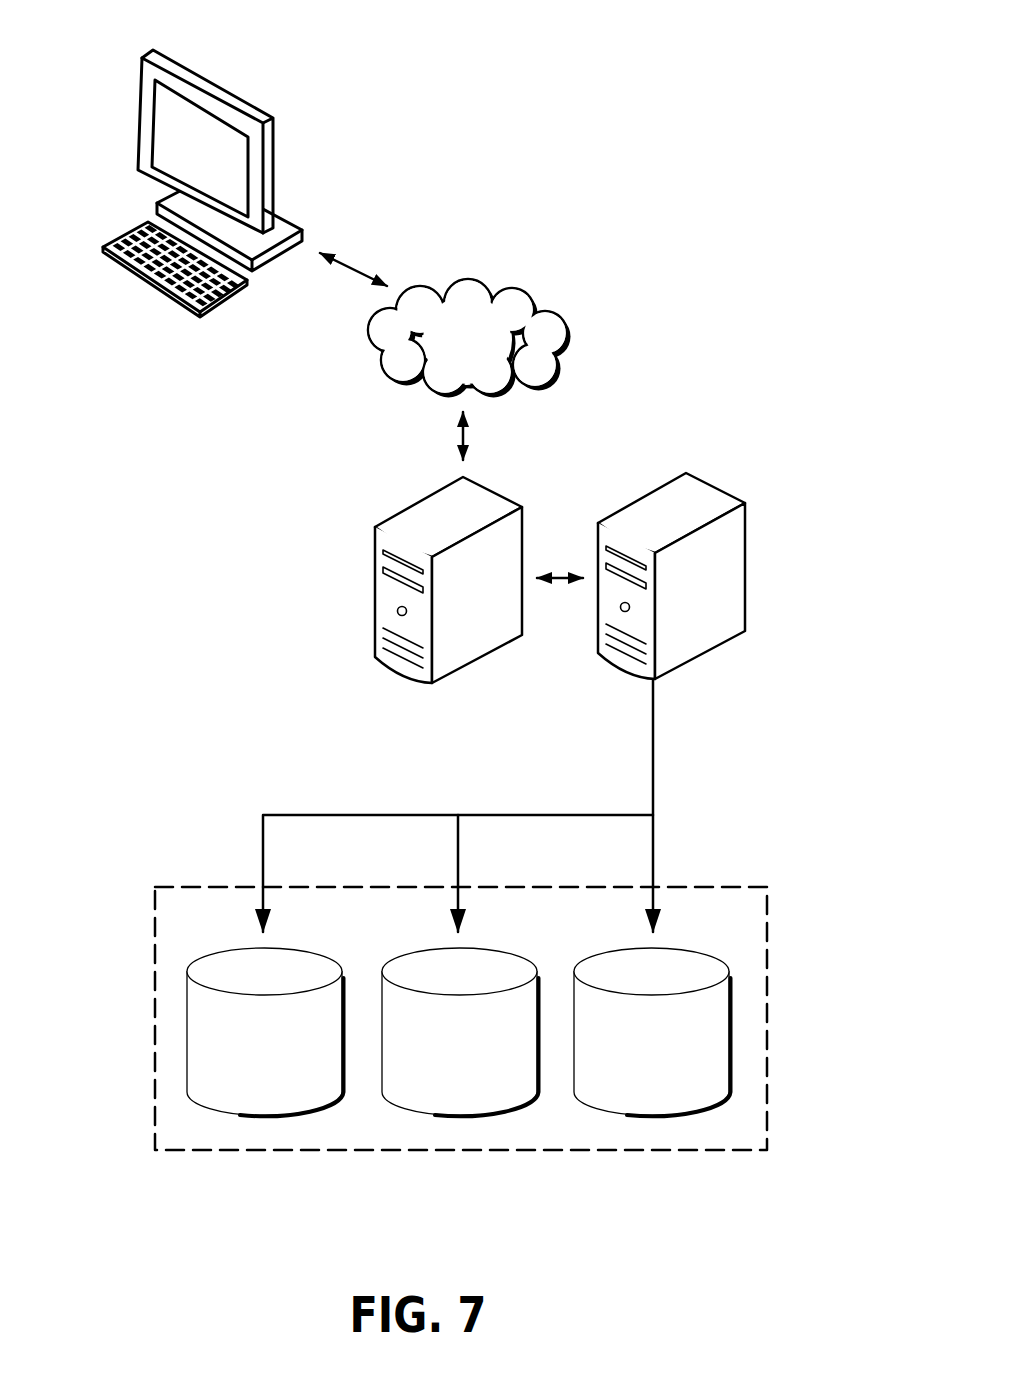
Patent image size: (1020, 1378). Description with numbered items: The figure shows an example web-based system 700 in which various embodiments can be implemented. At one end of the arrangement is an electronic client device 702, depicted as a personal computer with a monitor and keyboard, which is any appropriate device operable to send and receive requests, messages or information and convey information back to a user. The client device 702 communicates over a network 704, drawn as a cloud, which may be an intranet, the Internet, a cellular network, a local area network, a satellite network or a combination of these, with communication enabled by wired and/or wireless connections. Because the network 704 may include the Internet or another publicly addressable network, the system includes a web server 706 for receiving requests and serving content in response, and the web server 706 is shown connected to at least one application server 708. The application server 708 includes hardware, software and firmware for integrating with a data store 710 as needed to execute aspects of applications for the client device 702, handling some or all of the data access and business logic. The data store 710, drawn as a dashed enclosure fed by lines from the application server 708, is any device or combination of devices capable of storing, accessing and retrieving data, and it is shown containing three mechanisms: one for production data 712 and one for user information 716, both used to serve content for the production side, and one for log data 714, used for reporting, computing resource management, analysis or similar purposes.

The system 700 is at (704, 320).
The electronic client device 702 is at (223, 84).
The network 704 is at (499, 291).
The web server 706 is at (376, 578).
The application server 708 is at (624, 673).
The data store 710 is at (438, 1059).
The production data 712 is at (265, 1118).
The log data 714 is at (458, 1118).
The user information 716 is at (650, 1118).